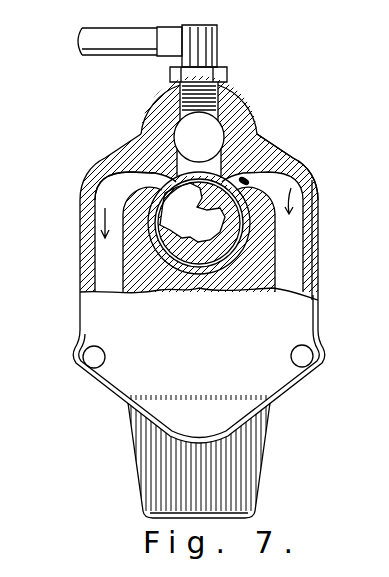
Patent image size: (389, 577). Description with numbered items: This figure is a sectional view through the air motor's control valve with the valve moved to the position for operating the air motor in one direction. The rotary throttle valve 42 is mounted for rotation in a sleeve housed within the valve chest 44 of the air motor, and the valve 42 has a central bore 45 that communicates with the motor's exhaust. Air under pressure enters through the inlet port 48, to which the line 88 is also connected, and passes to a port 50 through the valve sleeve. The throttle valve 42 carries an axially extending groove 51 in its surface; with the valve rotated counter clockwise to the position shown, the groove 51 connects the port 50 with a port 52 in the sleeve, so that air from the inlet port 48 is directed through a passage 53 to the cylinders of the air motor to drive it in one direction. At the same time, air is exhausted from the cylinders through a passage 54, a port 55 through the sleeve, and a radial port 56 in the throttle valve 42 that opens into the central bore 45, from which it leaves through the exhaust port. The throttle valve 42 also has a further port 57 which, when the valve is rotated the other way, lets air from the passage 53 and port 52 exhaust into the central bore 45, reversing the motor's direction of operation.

The line 88 is at (140, 48).
The inlet port 48 is at (227, 115).
The port 52 is at (132, 152).
The port 50 is at (222, 148).
The axially extending groove 51 is at (236, 164).
The port 55 is at (262, 176).
The radial port 56 is at (293, 185).
The rotary throttle valve 42 is at (243, 233).
The valve chest 44 is at (316, 243).
The passage 54 is at (290, 258).
The passage 53 is at (108, 250).
The port 57 is at (152, 243).
The central bore 45 is at (198, 242).